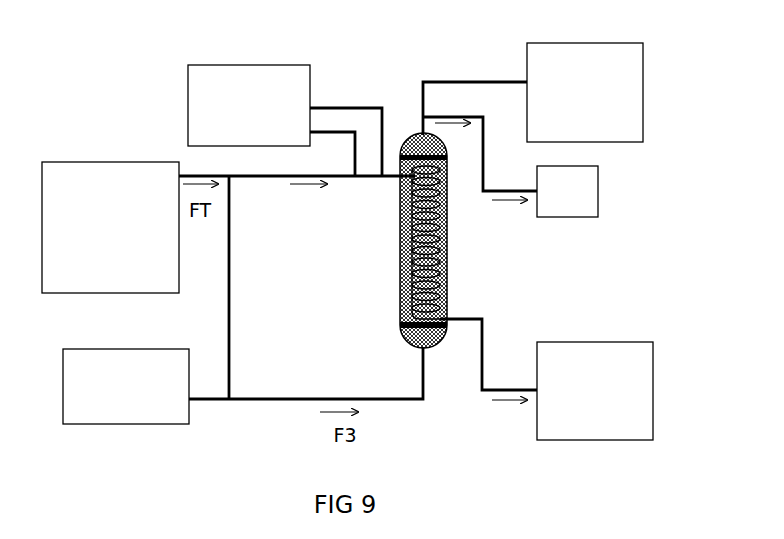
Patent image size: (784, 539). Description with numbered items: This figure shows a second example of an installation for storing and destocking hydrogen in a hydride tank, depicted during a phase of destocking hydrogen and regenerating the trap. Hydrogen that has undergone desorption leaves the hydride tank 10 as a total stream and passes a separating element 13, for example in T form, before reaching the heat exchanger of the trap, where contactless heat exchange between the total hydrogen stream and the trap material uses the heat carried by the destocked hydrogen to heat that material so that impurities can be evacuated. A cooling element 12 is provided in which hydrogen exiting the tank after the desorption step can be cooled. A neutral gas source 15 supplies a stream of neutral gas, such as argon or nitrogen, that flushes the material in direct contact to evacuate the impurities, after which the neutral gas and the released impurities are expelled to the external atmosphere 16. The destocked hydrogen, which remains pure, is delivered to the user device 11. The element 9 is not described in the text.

The gas separation unit 9 is at (591, 55).
The hydride tank 10 is at (102, 173).
The user device 11 is at (615, 355).
The cooling element 12 is at (253, 78).
The separating element 13 is at (237, 181).
The neutral gas source 15 is at (97, 360).
The external atmosphere 16 is at (588, 175).